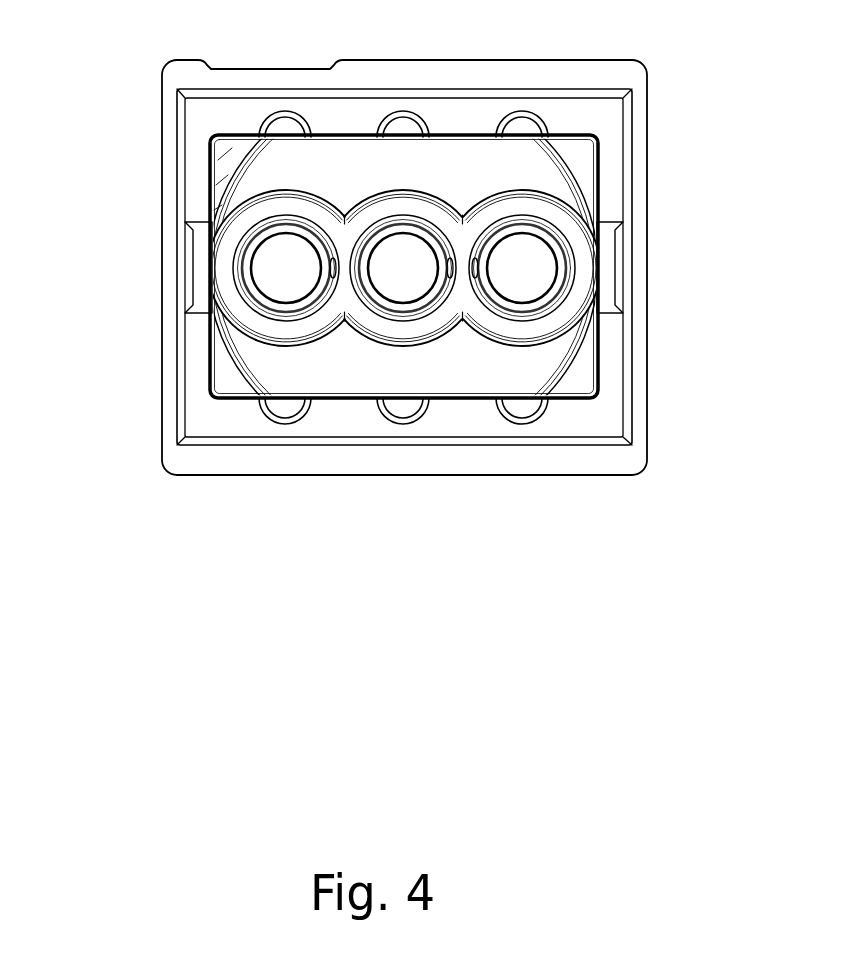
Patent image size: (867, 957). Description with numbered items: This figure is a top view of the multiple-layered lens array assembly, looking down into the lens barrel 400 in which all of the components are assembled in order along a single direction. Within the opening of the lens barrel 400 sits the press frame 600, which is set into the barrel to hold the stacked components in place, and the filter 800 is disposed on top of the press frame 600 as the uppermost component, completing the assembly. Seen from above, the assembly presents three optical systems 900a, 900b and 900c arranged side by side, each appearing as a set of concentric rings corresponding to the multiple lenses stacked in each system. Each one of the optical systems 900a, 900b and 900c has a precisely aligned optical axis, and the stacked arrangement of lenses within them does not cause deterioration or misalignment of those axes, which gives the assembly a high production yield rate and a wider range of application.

The lens barrel 400 is at (633, 75).
The press frame 600 is at (610, 122).
The filter 800 is at (230, 150).
The optical system 900a is at (522, 268).
The optical system 900b is at (403, 268).
The optical system 900c is at (286, 268).